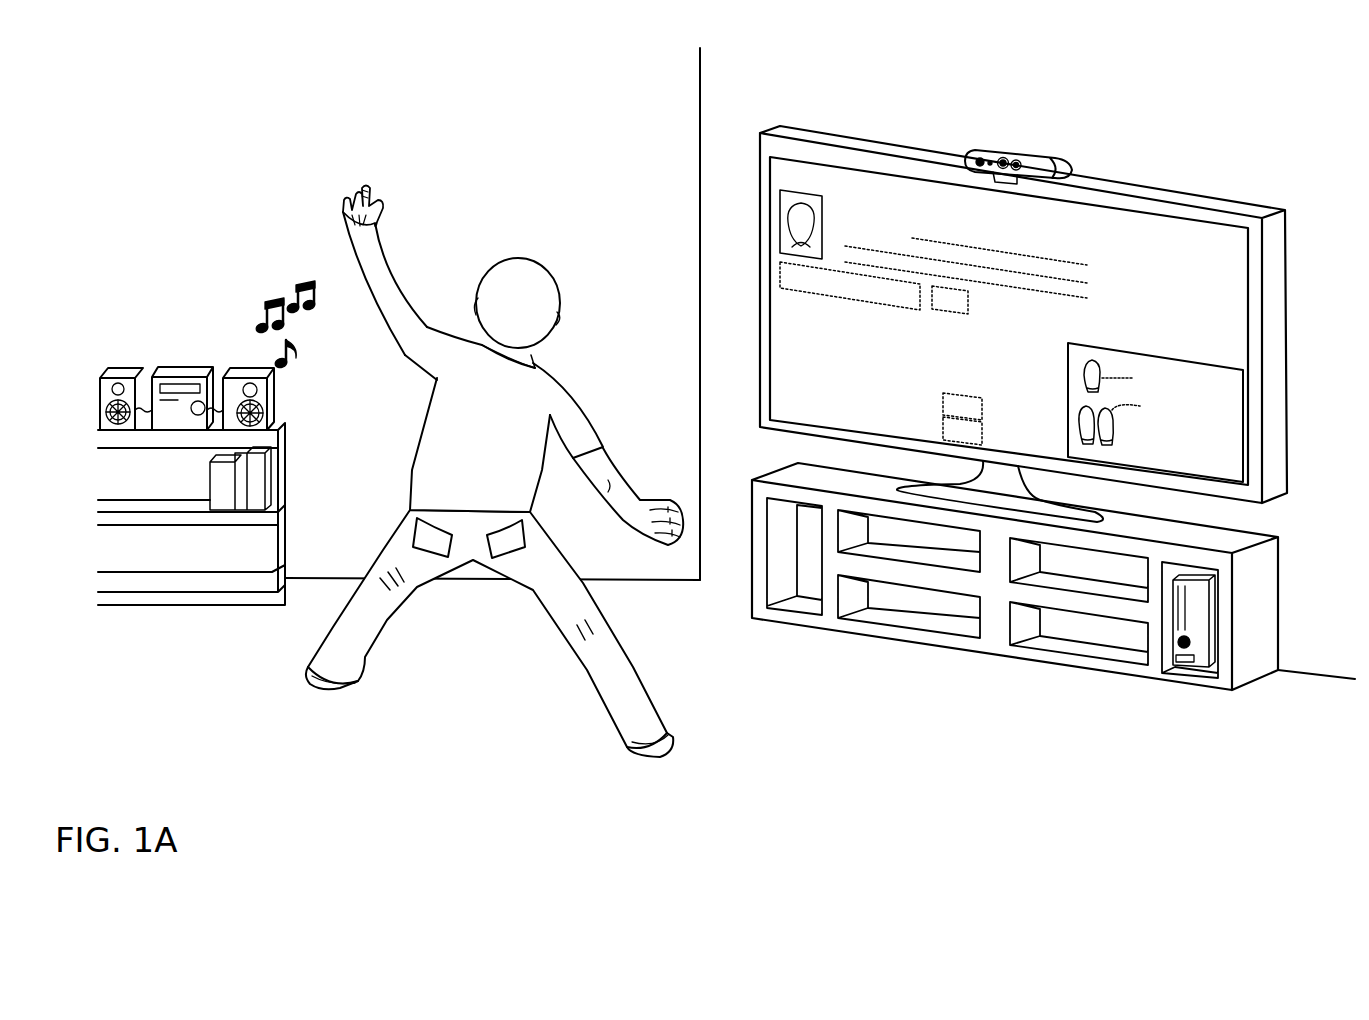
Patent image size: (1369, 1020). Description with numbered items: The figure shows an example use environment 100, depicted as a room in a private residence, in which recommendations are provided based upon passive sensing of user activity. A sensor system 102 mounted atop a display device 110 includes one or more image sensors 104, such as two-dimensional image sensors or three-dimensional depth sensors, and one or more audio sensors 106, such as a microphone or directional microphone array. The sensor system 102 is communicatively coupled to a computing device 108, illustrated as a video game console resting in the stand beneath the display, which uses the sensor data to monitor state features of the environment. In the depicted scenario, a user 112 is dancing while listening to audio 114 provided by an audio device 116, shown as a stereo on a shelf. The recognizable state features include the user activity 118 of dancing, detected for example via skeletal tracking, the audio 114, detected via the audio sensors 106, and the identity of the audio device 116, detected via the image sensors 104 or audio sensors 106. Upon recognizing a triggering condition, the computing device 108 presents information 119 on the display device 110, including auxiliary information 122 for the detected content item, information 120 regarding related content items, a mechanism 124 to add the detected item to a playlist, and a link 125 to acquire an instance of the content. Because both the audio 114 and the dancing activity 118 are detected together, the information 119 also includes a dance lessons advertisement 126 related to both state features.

The use environment 100 is at (257, 86).
The sensor system 102 is at (981, 138).
The image sensors 104 is at (1005, 156).
The audio sensors 106 is at (1020, 161).
The computing device 108 is at (1197, 697).
The display device 110 is at (1275, 208).
The user 112 is at (494, 484).
The audio 114 is at (261, 279).
The audio device 116 is at (165, 339).
The user activity 118 is at (398, 184).
The information 119 is at (1009, 321).
The information regarding a related content item 120 is at (950, 366).
The auxiliary information 122 is at (940, 209).
The mechanism to add the detected content item to a content playlist 124 is at (835, 291).
The link 125 is at (966, 308).
The dance lessons advertisement 126 is at (1108, 357).